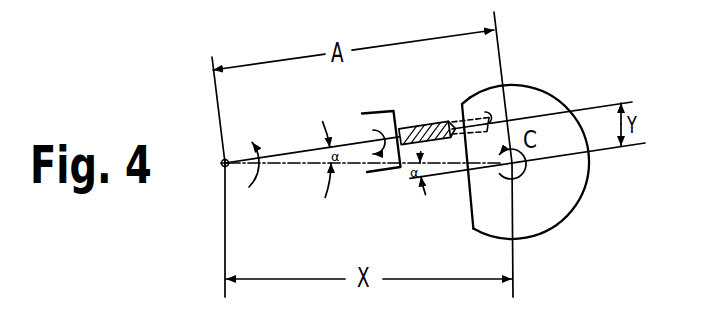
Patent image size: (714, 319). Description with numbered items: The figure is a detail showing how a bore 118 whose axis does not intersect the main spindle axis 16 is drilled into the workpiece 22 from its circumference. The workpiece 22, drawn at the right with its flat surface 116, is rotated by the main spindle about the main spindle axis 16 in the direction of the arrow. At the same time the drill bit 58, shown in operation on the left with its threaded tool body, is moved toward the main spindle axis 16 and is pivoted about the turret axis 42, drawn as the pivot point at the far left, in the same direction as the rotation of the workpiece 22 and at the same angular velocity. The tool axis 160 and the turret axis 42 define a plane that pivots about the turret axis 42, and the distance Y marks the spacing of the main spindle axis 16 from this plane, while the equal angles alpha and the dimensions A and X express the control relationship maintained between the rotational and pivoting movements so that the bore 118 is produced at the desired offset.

The turret axis 42 is at (223, 167).
The axis of the milling tool 160 is at (300, 150).
The drill bit 58 is at (431, 124).
The bore 118 is at (472, 119).
The workpiece 22 is at (573, 189).
The flat surface 116 is at (468, 201).
The main spindle axis 16 is at (505, 171).